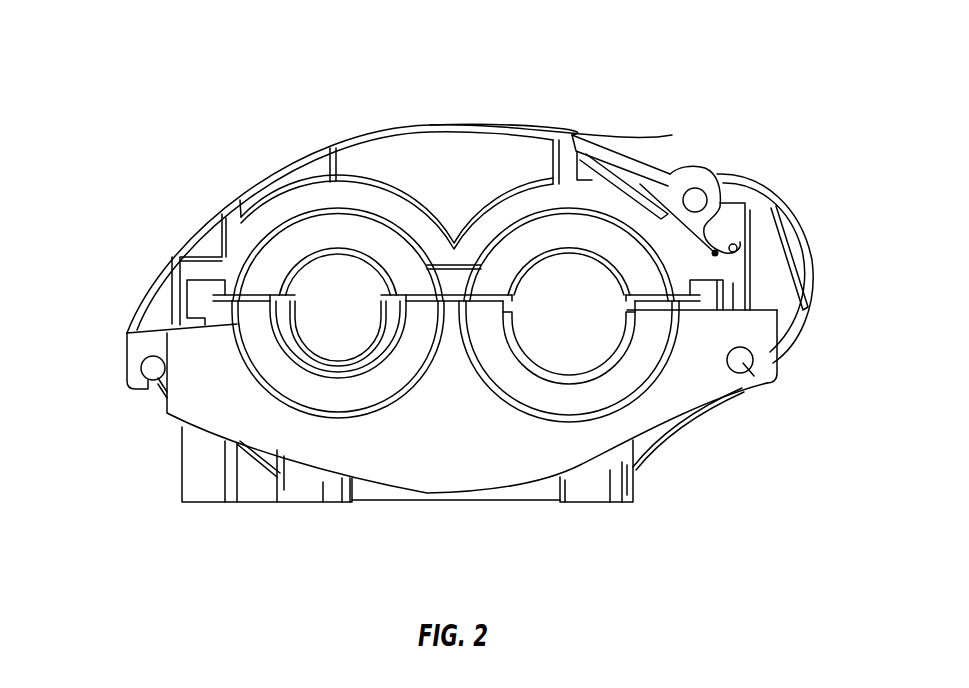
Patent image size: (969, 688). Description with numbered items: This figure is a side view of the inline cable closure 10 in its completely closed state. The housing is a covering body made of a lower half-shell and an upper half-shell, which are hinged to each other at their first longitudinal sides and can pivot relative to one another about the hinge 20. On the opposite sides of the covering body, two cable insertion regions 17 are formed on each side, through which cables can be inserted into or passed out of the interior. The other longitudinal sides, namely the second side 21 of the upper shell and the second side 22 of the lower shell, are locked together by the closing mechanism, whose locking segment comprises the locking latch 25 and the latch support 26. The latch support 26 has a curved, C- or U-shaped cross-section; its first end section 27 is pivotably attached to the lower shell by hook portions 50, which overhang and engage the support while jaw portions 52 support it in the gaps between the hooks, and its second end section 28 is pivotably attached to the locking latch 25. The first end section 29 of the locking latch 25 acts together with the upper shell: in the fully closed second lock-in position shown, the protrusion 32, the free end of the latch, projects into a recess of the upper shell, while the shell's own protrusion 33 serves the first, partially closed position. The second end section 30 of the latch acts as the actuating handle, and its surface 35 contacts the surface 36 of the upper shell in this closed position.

The cable closure 10 is at (246, 138).
The surface of the second shell 36 is at (553, 177).
The second end section of the locking latch 30 is at (590, 133).
The surface of the second end section 35 is at (618, 146).
The locking latch 25 is at (651, 146).
The second end section of the latch support 28 is at (695, 200).
The first end section of the locking latch 29 is at (731, 222).
The second side of the upper shell 21 is at (734, 296).
The latch support 26 is at (821, 333).
The hook portions 50 is at (775, 367).
The first end section of the latch support 27 is at (762, 385).
The jaw portions 52 is at (716, 395).
The second side of the lower shell 22 is at (712, 290).
The protrusion of the second shell 33 is at (724, 320).
The protrusion of the locking latch 32 is at (715, 253).
The cable insertion regions 17 is at (371, 362).
The hinge 20 is at (149, 388).